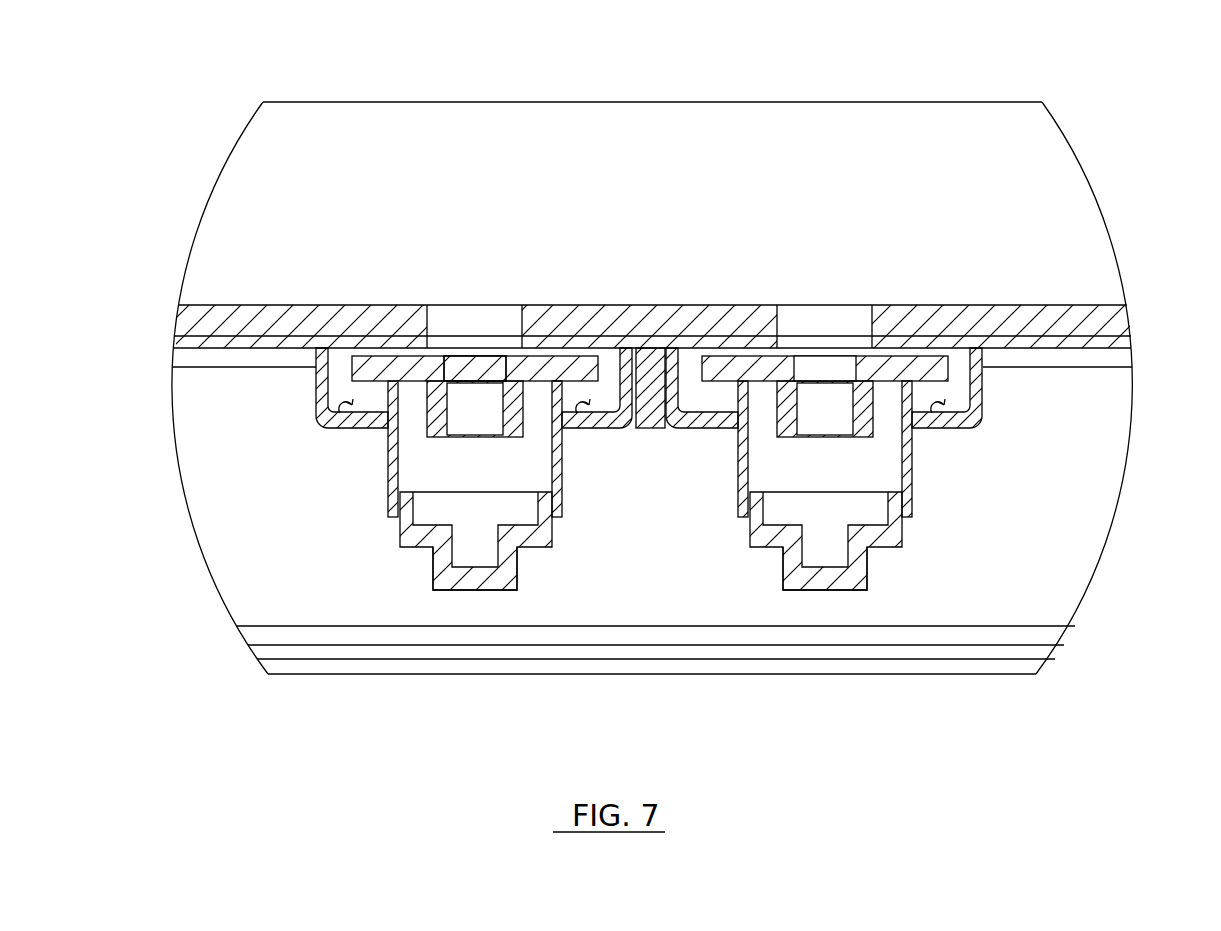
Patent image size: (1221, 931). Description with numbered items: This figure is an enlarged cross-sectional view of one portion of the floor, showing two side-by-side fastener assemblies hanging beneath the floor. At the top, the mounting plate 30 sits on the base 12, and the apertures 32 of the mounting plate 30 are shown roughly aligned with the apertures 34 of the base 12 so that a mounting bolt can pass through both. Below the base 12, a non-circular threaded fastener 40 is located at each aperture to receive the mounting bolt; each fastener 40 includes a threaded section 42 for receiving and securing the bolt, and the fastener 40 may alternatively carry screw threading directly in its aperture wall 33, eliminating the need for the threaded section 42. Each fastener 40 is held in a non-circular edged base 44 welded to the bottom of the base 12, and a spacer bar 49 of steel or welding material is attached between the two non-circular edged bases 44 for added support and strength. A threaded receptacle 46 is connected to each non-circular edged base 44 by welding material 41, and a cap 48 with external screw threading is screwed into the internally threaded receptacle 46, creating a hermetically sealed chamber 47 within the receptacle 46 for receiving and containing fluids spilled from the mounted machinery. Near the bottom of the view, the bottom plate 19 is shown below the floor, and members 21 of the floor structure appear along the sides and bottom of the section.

The base 12 is at (1072, 340).
The bottom plate 19 is at (307, 666).
The frame members 21 is at (220, 357).
The mounting plate 30 is at (1027, 318).
The apertures of the mounting plate 32 is at (468, 296).
The aperture wall 33 is at (507, 367).
The apertures of the base 34 is at (828, 340).
The non-circular threaded fastener 40 is at (358, 362).
The welding material 41 is at (337, 417).
The threaded section 42 is at (517, 408).
The non-circular edged base 44 is at (330, 388).
The threaded receptacle 46 is at (397, 503).
The hermetically sealed chamber 47 is at (410, 468).
The cap 48 is at (468, 585).
The spacer bar 49 is at (650, 423).